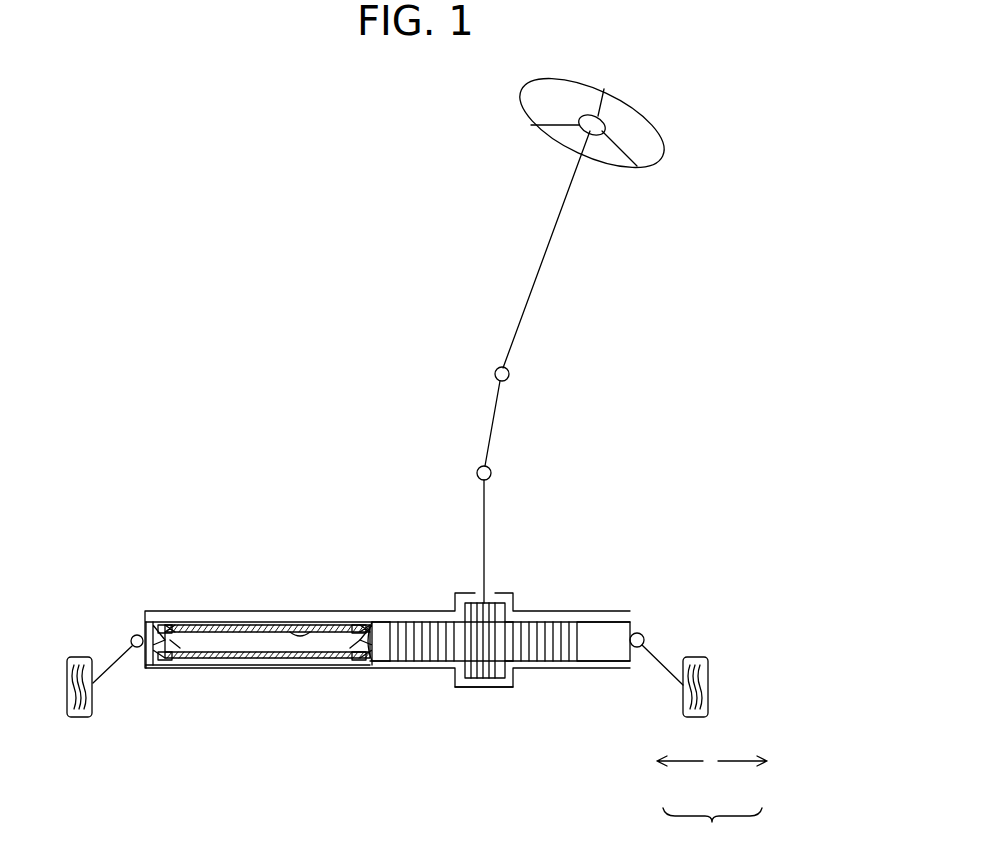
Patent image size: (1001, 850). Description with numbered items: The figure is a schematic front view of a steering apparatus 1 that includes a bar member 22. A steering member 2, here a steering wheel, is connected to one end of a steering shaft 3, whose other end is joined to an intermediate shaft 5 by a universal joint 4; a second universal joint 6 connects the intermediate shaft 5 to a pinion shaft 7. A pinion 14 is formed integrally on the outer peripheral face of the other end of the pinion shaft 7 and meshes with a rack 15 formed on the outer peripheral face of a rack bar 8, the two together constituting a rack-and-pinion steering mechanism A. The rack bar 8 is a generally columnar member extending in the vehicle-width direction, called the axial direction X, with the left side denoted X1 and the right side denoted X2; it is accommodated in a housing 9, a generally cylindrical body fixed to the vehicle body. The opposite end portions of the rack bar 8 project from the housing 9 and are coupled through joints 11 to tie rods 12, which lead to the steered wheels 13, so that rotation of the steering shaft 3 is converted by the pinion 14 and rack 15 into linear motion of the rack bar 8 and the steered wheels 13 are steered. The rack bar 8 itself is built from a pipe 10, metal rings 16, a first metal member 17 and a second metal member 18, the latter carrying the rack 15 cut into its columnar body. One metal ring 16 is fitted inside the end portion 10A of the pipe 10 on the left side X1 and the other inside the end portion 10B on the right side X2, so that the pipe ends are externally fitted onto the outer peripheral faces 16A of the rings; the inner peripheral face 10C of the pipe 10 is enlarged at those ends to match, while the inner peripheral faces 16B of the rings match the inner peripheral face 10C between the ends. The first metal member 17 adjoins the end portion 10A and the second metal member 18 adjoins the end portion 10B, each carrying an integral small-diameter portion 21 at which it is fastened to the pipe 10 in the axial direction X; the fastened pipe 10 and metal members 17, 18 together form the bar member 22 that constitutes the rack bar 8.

The steering apparatus 1 is at (693, 73).
The steering member 2 is at (583, 80).
The steering shaft 3 is at (546, 250).
The universal joint 4 is at (510, 375).
The intermediate shaft 5 is at (490, 435).
The universal joint 6 is at (492, 471).
The pinion shaft 7 is at (497, 540).
The rack bar 8 is at (551, 663).
The housing 9 is at (425, 611).
The pipe 10 is at (237, 648).
The end portion of the pipe 10A is at (170, 626).
The end portion of the pipe 10B is at (352, 640).
The inner peripheral face of the pipe 10C is at (276, 635).
The joint 11 is at (137, 634).
The tie rod 12 is at (110, 660).
The steered wheel 13 is at (78, 718).
The pinion 14 is at (485, 676).
The rack 15 is at (433, 655).
The metal ring 16 is at (176, 655).
The outer peripheral face of the metal ring 16A is at (168, 660).
The inner peripheral face of the metal ring 16B is at (160, 660).
The first metal member 17 is at (148, 665).
The second metal member 18 is at (383, 650).
The small-diameter portion 21 is at (180, 650).
The bar member 22 is at (309, 626).
The rack-and-pinion steering mechanism A is at (529, 696).
The axial direction X is at (712, 828).
The left side X1 is at (688, 763).
The right side X2 is at (737, 763).